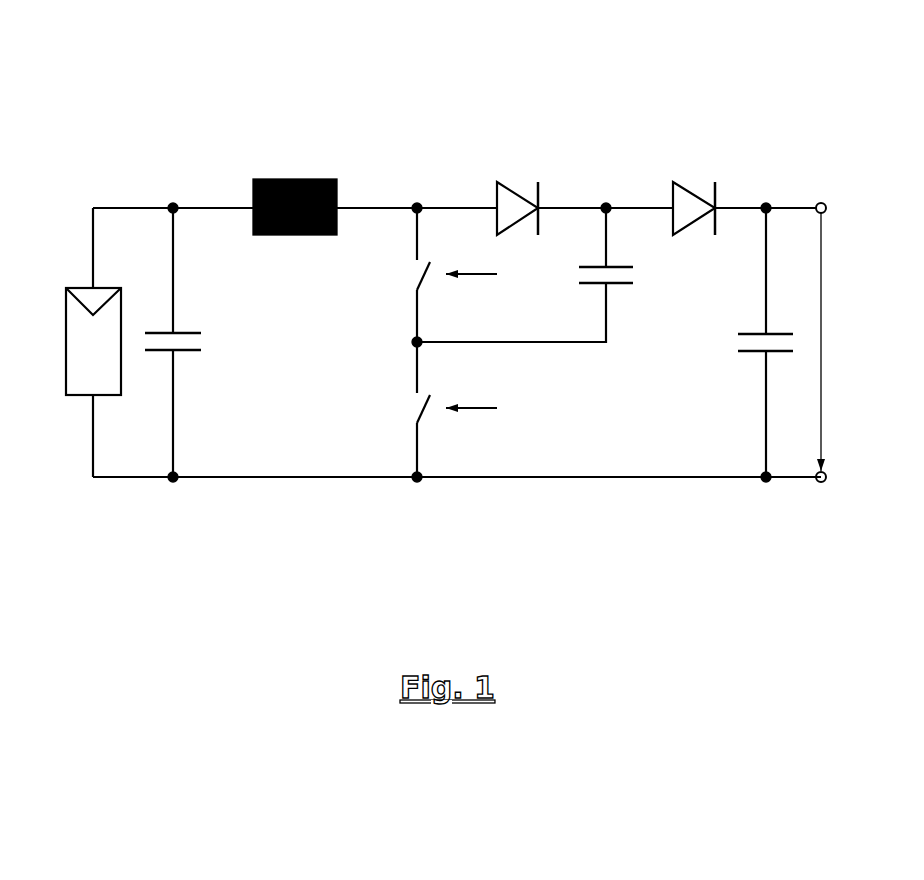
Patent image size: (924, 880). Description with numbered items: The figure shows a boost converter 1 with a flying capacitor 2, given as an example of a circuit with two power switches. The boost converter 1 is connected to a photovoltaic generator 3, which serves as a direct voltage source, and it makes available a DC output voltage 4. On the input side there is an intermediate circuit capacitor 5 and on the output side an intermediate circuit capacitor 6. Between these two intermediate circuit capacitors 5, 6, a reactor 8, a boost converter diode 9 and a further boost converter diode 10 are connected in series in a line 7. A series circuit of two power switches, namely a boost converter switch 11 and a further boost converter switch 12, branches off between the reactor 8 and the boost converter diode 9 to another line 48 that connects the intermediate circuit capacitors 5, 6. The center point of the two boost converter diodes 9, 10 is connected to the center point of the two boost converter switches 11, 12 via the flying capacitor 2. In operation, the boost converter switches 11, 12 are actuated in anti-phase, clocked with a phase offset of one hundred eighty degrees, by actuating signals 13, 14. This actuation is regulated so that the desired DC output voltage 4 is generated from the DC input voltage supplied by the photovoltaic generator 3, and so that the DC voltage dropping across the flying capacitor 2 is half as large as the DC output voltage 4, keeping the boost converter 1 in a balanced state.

The boost converter 1 is at (744, 127).
The flying capacitor 2 is at (617, 257).
The photovoltaic generator 3 is at (73, 277).
The DC output voltage 4 is at (826, 347).
The input-side intermediate circuit capacitor 5 is at (165, 325).
The output-side intermediate circuit capacitor 6 is at (768, 332).
The line 7 is at (216, 208).
The reactor 8 is at (300, 179).
The boost converter diode 9 is at (520, 185).
The further boost converter diode 10 is at (697, 185).
The boost converter switch 11 is at (407, 273).
The further boost converter switch 12 is at (403, 410).
The actuating signal 13 is at (468, 270).
The actuating signal 14 is at (470, 417).
The line 48 is at (230, 477).